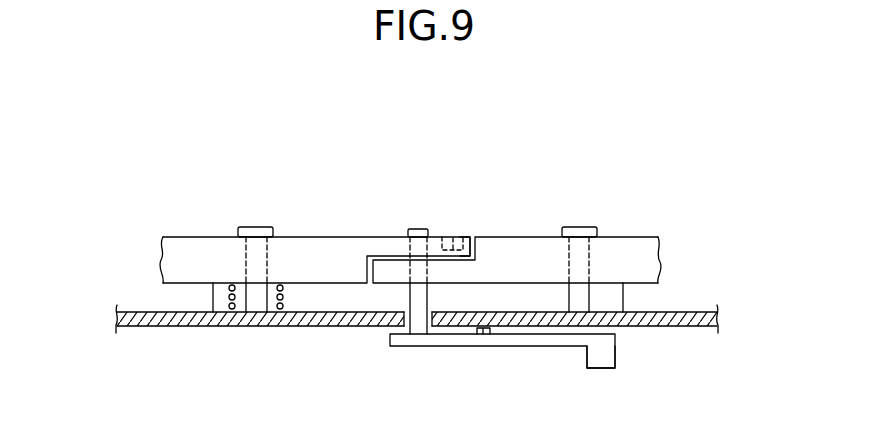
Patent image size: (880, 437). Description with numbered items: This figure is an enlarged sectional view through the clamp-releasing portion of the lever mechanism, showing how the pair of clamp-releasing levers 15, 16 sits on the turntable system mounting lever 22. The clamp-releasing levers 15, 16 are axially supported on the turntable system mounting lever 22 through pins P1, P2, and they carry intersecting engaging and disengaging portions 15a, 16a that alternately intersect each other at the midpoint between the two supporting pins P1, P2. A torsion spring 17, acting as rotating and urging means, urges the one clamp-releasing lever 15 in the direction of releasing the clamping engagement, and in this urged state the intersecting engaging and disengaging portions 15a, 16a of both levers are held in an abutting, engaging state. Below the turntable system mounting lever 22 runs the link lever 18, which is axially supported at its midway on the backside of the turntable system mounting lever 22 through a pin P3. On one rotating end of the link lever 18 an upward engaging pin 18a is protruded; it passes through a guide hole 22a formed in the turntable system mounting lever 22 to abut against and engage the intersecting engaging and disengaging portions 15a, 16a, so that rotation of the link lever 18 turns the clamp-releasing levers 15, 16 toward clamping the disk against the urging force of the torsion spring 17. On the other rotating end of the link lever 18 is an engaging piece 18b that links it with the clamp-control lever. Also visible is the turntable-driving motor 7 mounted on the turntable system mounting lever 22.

The turntable-driving motor 7 is at (613, 295).
The clamp-releasing lever 15 is at (319, 233).
The intersecting engaging and disengaging portion 15a is at (461, 236).
The clamp-releasing lever 16 is at (529, 233).
The intersecting engaging and disengaging portion 16a is at (447, 236).
The torsion spring 17 is at (285, 298).
The link lever 18 is at (548, 348).
The engaging pin 18a is at (414, 230).
The engaging piece 18b is at (610, 353).
The turntable system mounting lever 22 is at (343, 328).
The guide hole 22a is at (430, 327).
The pin P1 is at (253, 232).
The pin P2 is at (580, 232).
The pin P3 is at (485, 335).